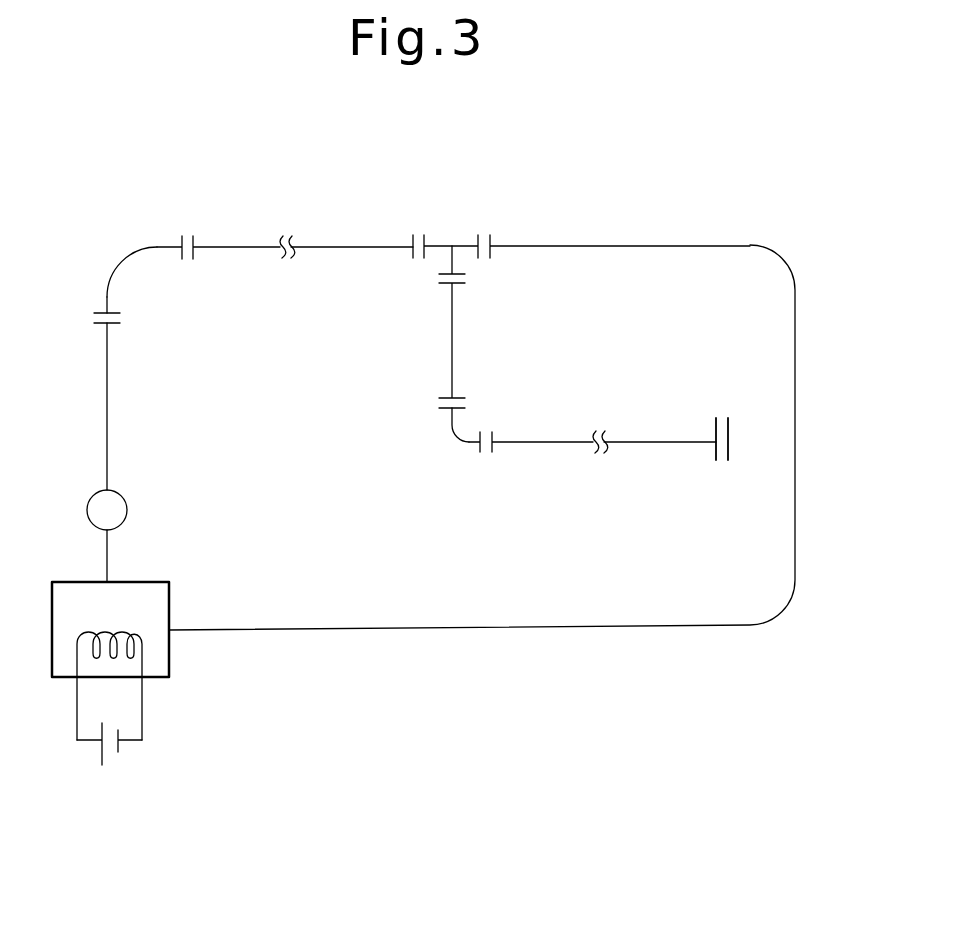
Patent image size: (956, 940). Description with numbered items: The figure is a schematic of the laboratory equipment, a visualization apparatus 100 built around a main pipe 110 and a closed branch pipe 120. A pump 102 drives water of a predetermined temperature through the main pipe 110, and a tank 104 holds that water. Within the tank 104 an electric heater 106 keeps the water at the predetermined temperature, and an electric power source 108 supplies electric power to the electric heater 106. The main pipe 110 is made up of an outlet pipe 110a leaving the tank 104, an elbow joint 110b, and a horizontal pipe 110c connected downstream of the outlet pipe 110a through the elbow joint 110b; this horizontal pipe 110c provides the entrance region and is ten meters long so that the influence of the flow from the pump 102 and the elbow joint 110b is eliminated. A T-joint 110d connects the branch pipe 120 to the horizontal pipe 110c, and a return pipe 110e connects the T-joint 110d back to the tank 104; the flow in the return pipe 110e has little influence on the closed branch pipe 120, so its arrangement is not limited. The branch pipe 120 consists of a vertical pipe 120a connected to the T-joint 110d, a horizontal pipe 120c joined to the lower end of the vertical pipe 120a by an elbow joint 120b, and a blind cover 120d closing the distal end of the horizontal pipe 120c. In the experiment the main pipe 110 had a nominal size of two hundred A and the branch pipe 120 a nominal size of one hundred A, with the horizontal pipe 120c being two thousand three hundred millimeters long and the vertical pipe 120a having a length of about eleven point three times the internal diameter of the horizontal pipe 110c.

The visualization apparatus 100 is at (822, 222).
The pump 102 is at (128, 507).
The tank 104 is at (170, 603).
The electric heater 106 is at (135, 643).
The electric power source 108 is at (118, 757).
The main pipe 110 is at (595, 218).
The outlet pipe 110a is at (108, 414).
The elbow joint 110b is at (112, 275).
The horizontal pipe 110c is at (240, 247).
The T-joint 110d is at (465, 244).
The return pipe 110e is at (795, 313).
The branch pipe 120 is at (412, 355).
The vertical pipe 120a is at (452, 322).
The elbow joint 120b is at (457, 433).
The horizontal pipe 120c is at (560, 443).
The blind cover 120d is at (732, 445).